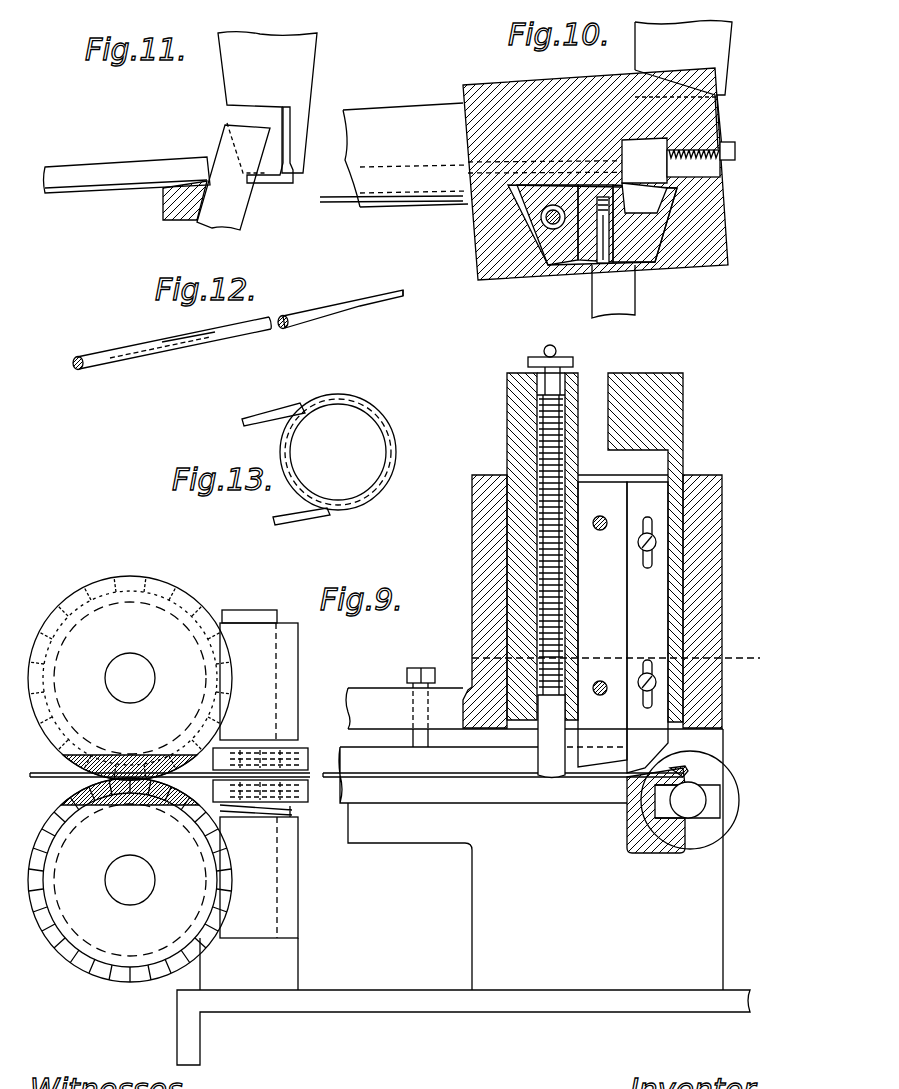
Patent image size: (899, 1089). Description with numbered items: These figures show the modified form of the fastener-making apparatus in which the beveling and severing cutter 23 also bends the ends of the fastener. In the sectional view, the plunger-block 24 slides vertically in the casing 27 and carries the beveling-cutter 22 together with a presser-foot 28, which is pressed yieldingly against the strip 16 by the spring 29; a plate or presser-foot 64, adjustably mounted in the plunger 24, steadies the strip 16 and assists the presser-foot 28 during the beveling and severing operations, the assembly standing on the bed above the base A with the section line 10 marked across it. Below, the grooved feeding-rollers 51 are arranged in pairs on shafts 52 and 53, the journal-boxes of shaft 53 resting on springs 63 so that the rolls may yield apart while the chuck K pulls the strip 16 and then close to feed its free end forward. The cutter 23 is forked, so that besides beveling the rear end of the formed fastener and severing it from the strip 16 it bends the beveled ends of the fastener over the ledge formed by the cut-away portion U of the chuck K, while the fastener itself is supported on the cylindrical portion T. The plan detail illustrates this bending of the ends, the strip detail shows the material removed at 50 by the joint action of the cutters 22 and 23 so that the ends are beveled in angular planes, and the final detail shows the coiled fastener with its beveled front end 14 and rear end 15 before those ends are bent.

In FIG. 11, the coiling-chuck K is at (267, 102).
In FIG. 10, the coiling-chuck K is at (725, 58).
In FIG. 11, the cut-away portion U is at (240, 112).
In FIG. 9, the cylindrical portion T is at (697, 798).
In FIG. 9, the base plate A is at (383, 1007).
In FIG. 9, the bed 10 is at (470, 660).
In FIG. 11, the front end of the fastener 14 is at (273, 153).
In FIG. 10, the front end of the fastener 14 is at (520, 155).
In FIG. 13, the front end of the fastener 14 is at (270, 410).
In FIG. 13, the rear end of the fastener 15 is at (312, 523).
In FIG. 11, the strip 16 is at (82, 190).
In FIG. 10, the strip 16 is at (391, 199).
In FIG. 12, the strip 16 is at (90, 370).
In FIG. 9, the strip 16 is at (45, 778).
In FIG. 11, the beveling-cutter 22 is at (165, 210).
In FIG. 10, the beveling-cutter 22 is at (588, 220).
In FIG. 9, the beveling-cutter 22 is at (602, 624).
In FIG. 11, the beveling and severing cutter 23 is at (233, 210).
In FIG. 10, the beveling and severing cutter 23 is at (630, 287).
In FIG. 9, the beveling and severing cutter 23 is at (650, 848).
In FIG. 10, the plunger-block 24 is at (547, 267).
In FIG. 9, the plunger-block 24 is at (683, 402).
In FIG. 10, the casing 27 is at (717, 223).
In FIG. 9, the casing 27 is at (723, 512).
In FIG. 9, the presser-foot 28 is at (553, 762).
In FIG. 10, the spring 29 is at (550, 218).
In FIG. 9, the spring 29 is at (535, 433).
In FIG. 12, the removed portion of material 50 is at (155, 358).
In FIG. 9, the feeding-rollers 51 is at (86, 603).
In FIG. 9, the shaft 52 is at (148, 882).
In FIG. 9, the shaft 53 is at (142, 680).
In FIG. 9, the springs 63 is at (290, 810).
In FIG. 10, the plate or presser-foot 64 is at (673, 185).
In FIG. 9, the plate or presser-foot 64 is at (653, 627).